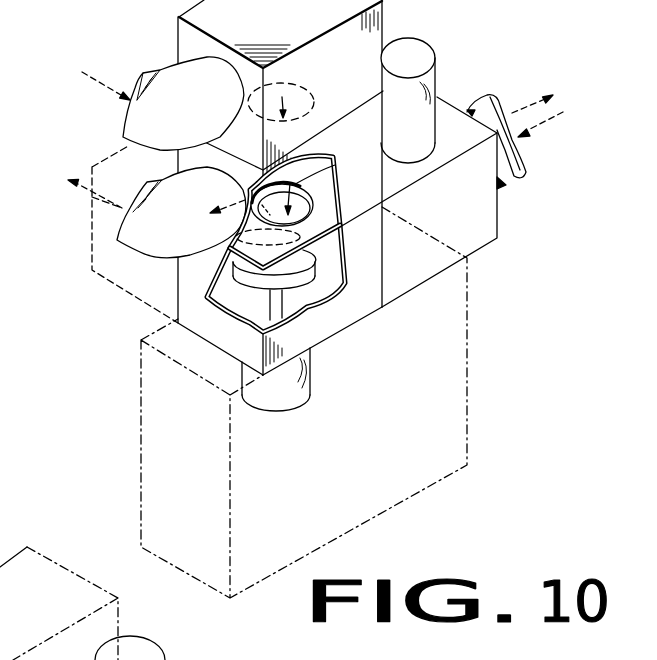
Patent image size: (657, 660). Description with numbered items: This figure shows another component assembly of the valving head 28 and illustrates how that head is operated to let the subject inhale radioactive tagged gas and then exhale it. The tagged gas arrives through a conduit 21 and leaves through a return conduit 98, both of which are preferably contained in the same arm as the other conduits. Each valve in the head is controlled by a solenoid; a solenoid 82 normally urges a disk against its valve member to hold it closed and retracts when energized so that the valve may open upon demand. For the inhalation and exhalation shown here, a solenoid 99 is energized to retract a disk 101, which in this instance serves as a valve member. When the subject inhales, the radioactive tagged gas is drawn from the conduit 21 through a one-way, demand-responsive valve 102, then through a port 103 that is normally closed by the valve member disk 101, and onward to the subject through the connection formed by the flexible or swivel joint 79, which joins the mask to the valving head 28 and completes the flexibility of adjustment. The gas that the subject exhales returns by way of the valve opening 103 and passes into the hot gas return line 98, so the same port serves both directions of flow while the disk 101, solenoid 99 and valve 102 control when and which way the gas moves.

The conduit 21 is at (130, 114).
The return conduit 98 is at (122, 237).
The one-way, demand-responsive valve 102 is at (292, 87).
The port 103 is at (330, 172).
The disk 101 is at (318, 256).
The solenoid 99 is at (312, 382).
The solenoid 82 is at (412, 146).
The flexible or swivel joint 79 is at (493, 108).
The valving head 28 is at (457, 354).